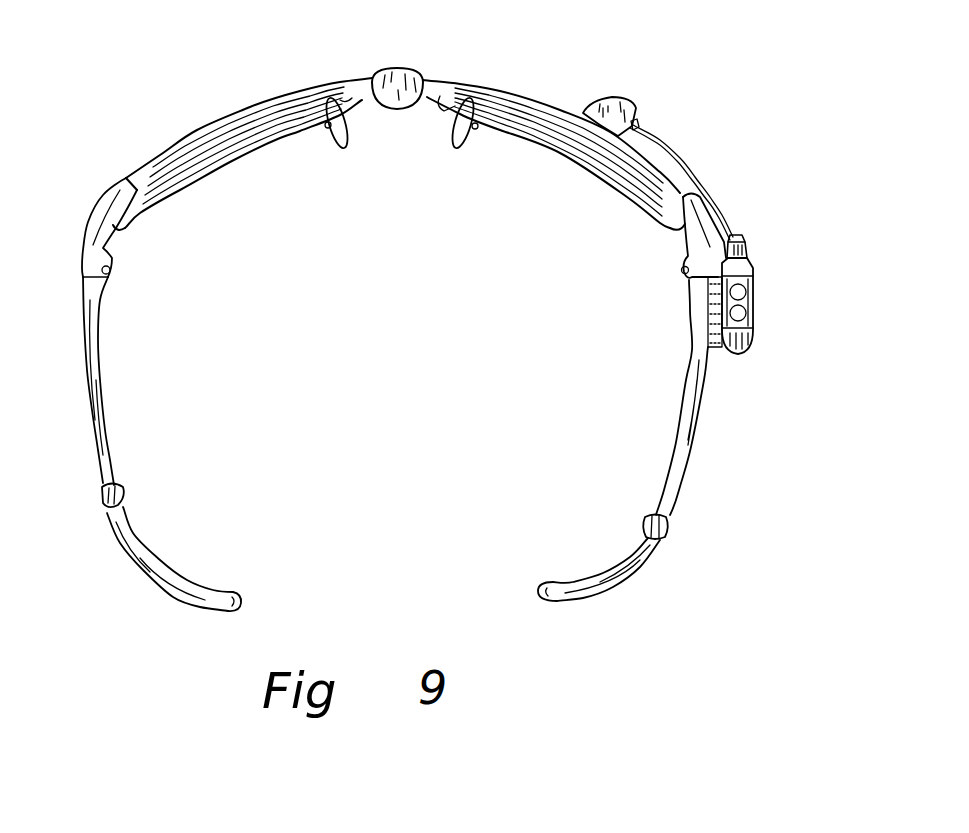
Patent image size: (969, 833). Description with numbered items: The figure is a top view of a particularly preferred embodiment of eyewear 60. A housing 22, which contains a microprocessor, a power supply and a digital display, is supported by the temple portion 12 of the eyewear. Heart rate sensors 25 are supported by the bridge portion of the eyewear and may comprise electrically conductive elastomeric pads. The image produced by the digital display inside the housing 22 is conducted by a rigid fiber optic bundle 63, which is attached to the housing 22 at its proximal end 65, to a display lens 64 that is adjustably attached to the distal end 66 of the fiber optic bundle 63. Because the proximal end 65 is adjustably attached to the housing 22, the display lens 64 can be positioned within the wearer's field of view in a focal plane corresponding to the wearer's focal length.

The eyewear 60 is at (186, 119).
The heart rate sensors 25 is at (457, 130).
The temple portion 12 is at (697, 432).
The housing 22 is at (757, 300).
The rigid fiber optic bundle 63 is at (692, 172).
The display lens 64 is at (607, 103).
The proximal end 65 is at (737, 240).
The distal end 66 is at (639, 124).